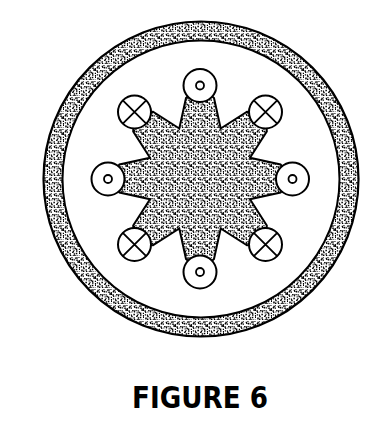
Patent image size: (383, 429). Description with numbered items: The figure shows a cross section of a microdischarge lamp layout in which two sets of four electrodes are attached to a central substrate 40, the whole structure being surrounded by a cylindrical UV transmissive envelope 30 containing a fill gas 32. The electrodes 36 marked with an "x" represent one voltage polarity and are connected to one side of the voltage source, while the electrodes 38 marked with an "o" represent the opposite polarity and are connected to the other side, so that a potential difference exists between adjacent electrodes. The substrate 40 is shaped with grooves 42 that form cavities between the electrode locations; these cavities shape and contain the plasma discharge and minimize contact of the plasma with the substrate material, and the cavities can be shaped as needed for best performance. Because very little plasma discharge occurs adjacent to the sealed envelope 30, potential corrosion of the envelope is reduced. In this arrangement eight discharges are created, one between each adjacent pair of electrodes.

The UV transmissive envelope 30 is at (137, 37).
The fill gas 32 is at (266, 70).
The electrodes 36 is at (118, 112).
The electrodes 38 is at (185, 90).
The substrate 40 is at (216, 189).
The grooves 42 is at (132, 160).